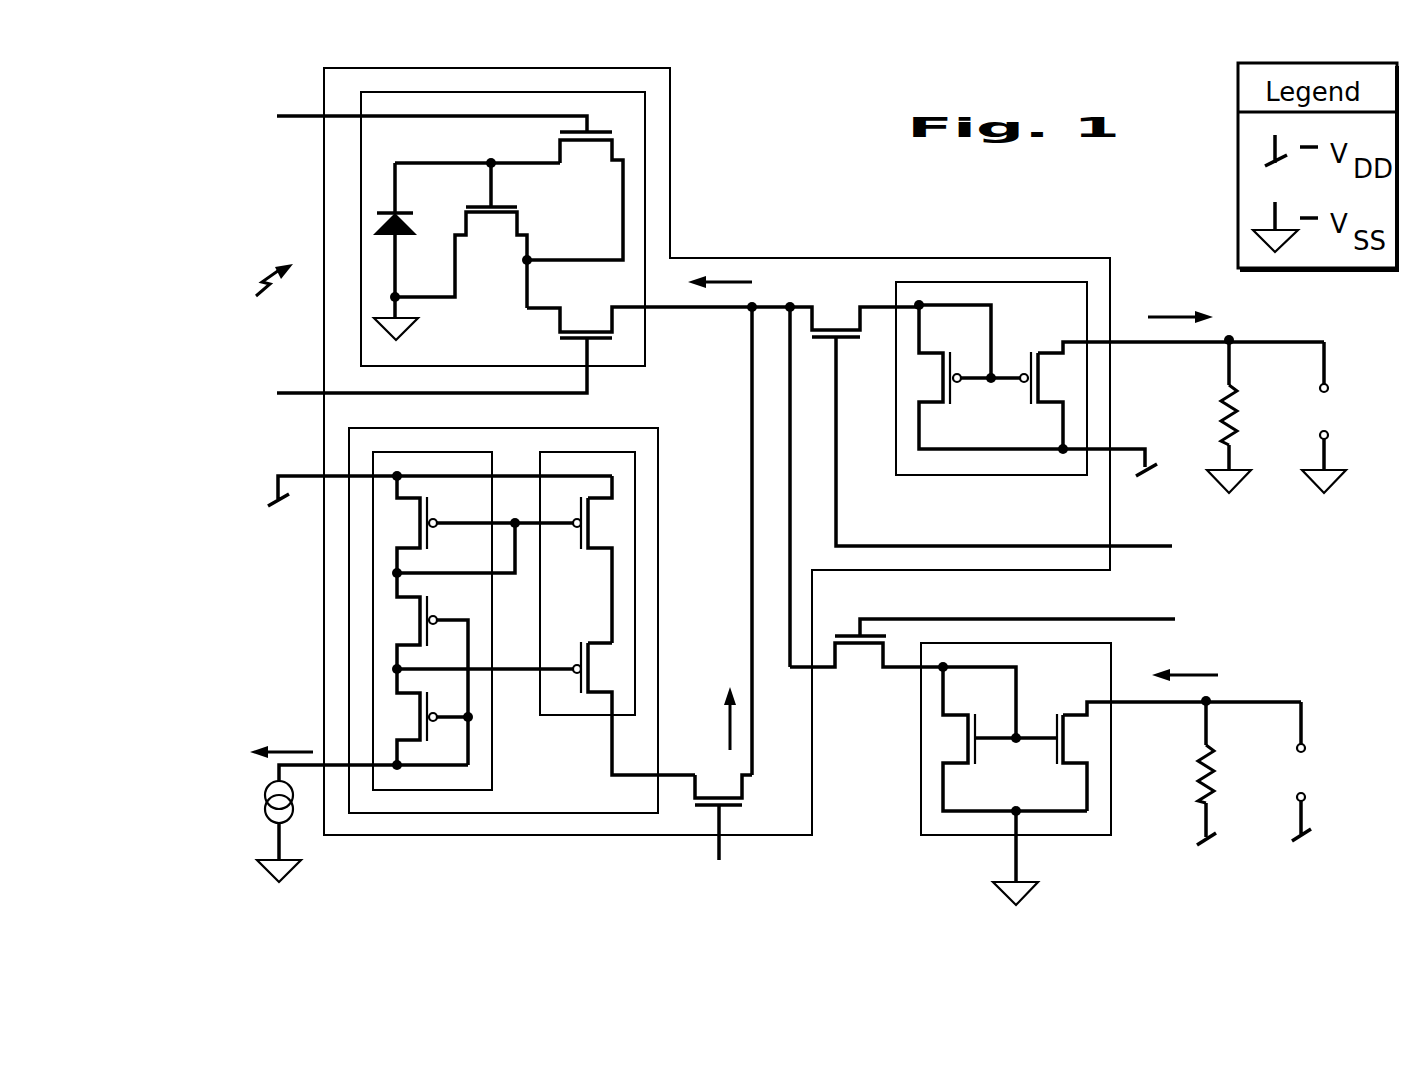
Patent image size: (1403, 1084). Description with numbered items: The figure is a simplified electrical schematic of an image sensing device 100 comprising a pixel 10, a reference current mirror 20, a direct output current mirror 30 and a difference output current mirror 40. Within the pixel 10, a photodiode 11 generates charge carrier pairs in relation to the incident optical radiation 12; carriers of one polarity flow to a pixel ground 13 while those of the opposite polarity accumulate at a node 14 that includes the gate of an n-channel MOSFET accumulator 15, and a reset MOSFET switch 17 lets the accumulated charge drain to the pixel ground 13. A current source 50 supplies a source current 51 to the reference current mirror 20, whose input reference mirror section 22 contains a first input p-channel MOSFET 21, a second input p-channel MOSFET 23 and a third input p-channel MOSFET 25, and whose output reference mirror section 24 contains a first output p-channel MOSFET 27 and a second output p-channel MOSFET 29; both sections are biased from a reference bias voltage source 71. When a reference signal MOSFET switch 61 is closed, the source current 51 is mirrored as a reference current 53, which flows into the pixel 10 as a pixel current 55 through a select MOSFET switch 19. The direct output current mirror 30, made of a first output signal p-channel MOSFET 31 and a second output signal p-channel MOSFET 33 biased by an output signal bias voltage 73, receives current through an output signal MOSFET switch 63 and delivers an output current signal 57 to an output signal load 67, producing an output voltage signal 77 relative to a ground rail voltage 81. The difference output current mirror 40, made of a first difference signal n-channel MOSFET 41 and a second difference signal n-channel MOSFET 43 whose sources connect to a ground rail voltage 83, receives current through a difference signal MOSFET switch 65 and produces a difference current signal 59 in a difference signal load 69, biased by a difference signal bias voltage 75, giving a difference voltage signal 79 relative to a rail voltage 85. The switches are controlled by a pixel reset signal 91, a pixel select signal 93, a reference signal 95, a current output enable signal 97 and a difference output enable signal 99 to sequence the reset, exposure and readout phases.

The image sensing device 100 is at (670, 67).
The pixel 10 is at (645, 112).
The photodiode 11 is at (380, 222).
The incident optical radiation 12 is at (268, 270).
The pixel ground 13 is at (385, 330).
The node 14 is at (487, 160).
The n-channel MOSFET accumulator 15 is at (518, 222).
The reset MOSFET switch 17 is at (612, 150).
The select MOSFET switch 19 is at (614, 320).
The reference current mirror 20 is at (362, 814).
The first input p-channel MOSFET 21 is at (395, 688).
The input reference mirror section 22 is at (437, 791).
The second input p-channel MOSFET 23 is at (395, 598).
The output reference mirror section 24 is at (612, 452).
The third input p-channel MOSFET 25 is at (395, 547).
The first output p-channel MOSFET 27 is at (595, 545).
The second output p-channel MOSFET 29 is at (597, 643).
The direct output current mirror 30 is at (997, 282).
The first output signal p-channel MOSFET 31 is at (935, 350).
The second output signal p-channel MOSFET 33 is at (1052, 341).
The difference output current mirror 40 is at (963, 833).
The first difference signal n-channel MOSFET 41 is at (955, 770).
The second difference signal n-channel MOSFET 43 is at (1073, 768).
The current source 50 is at (266, 820).
The source current 51 is at (288, 750).
The reference current 53 is at (735, 725).
The pixel current 55 is at (727, 282).
The output current signal 57 is at (1175, 315).
The difference current signal 59 is at (1195, 675).
The reference signal MOSFET switch 61 is at (745, 785).
The output signal MOSFET switch 63 is at (860, 323).
The difference signal MOSFET switch 65 is at (833, 655).
The output signal load 67 is at (1222, 397).
The difference signal load 69 is at (1215, 770).
The reference bias voltage source 71 is at (268, 497).
The output signal bias voltage 73 is at (1158, 466).
The difference signal bias voltage 75 is at (1200, 840).
The output voltage signal 77 is at (1345, 388).
The difference voltage signal 79 is at (1327, 752).
The ground rail voltage 81 is at (1335, 490).
The ground rail voltage 83 is at (1032, 892).
The ground rail voltage 85 is at (1305, 838).
The pixel reset signal 91 is at (242, 95).
The pixel select signal 93 is at (245, 412).
The reference signal 95 is at (700, 885).
The current output enable signal 97 is at (1243, 548).
The difference output enable signal 99 is at (1243, 620).